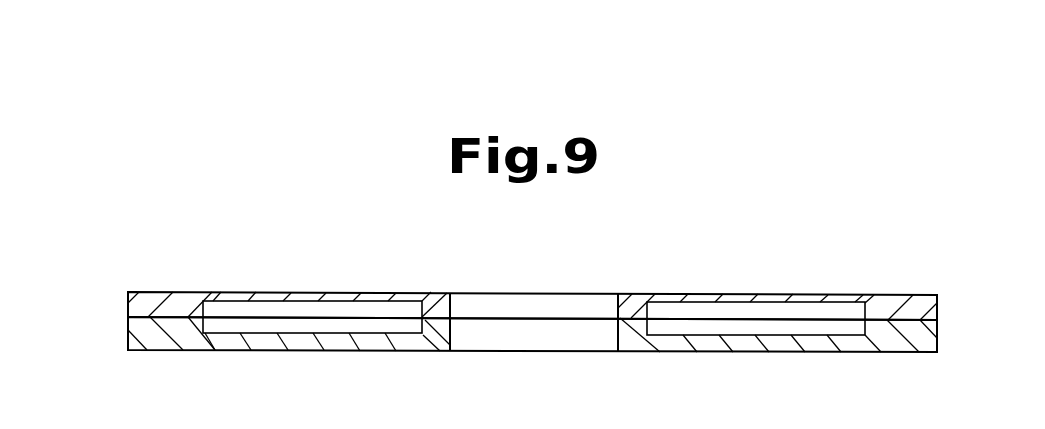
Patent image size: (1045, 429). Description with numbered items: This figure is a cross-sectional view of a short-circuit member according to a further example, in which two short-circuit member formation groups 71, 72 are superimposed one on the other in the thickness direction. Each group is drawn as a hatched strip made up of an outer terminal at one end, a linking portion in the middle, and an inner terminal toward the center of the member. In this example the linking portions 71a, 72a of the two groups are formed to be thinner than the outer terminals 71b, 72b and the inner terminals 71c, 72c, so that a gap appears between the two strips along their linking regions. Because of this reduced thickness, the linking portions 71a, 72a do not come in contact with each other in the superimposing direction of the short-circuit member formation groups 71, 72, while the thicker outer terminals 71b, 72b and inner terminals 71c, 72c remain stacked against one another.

The short-circuit member formation group 71 is at (126, 296).
The short-circuit member formation group 72 is at (126, 325).
The linking portion 71a is at (312, 292).
The outer terminal 71b is at (169, 292).
The inner terminal 71c is at (437, 308).
The linking portion 72a is at (303, 351).
The outer terminal 72b is at (157, 350).
The inner terminal 72c is at (439, 334).